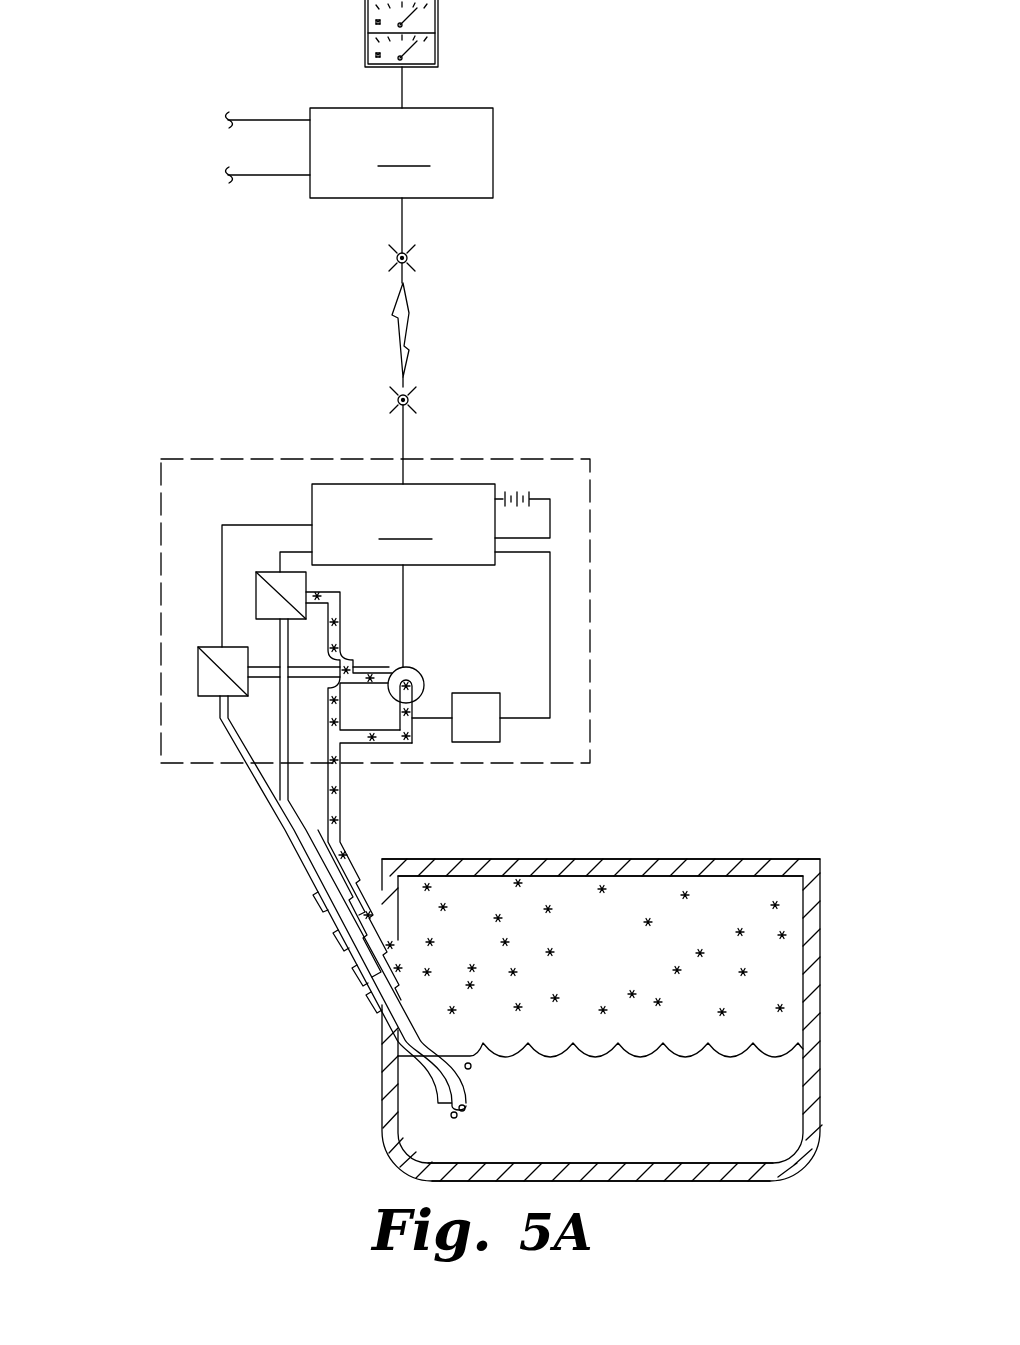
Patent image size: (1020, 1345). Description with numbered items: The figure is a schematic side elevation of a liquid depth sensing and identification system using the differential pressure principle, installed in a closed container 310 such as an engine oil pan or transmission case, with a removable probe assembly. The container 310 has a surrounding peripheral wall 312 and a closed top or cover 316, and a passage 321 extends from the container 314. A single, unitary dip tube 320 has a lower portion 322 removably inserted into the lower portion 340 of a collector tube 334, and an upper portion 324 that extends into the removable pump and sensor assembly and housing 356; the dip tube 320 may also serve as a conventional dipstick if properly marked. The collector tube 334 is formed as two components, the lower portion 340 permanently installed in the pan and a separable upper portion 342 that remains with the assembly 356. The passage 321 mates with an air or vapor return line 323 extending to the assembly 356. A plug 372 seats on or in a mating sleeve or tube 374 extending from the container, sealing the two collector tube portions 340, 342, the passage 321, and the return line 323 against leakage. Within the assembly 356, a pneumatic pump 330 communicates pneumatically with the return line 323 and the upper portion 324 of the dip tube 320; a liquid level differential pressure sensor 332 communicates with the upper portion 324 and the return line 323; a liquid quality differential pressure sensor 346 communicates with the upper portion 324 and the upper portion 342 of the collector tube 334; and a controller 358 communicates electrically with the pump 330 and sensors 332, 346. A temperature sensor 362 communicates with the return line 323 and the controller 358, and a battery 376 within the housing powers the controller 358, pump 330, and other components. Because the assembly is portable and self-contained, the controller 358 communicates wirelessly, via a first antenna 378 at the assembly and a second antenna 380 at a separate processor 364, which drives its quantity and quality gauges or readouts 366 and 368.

The closed container 310 is at (780, 775).
The peripheral wall 312 is at (820, 1003).
The container 314 is at (723, 1183).
The closed top or cover 316 is at (645, 859).
The dip tube 320 is at (307, 862).
The passage 321 is at (398, 943).
The lower portion of dip tube 322 is at (362, 1002).
The air or vapor return line 323 is at (342, 797).
The upper portion of dip tube 324 is at (278, 715).
The pneumatic pump 330 is at (423, 677).
The liquid level differential pressure sensor 332 is at (258, 580).
The collector tube 334 is at (288, 843).
The lower portion of collector tube 340 is at (418, 1057).
The upper portion of collector tube 342 is at (247, 768).
The liquid quality differential pressure sensor 346 is at (207, 648).
The pump and sensor assembly and housing 356 is at (160, 652).
The controller 358 is at (386, 601).
The temperature sensor 362 is at (500, 730).
The processor 364 is at (360, 153).
The quantity gauge or readout 366 is at (365, 13).
The quality gauge or readout 368 is at (365, 43).
The plug 372 is at (320, 902).
The mating sleeve or tube 374 is at (340, 947).
The battery 376 is at (533, 494).
The first antenna 378 is at (403, 440).
The second antenna 380 is at (402, 228).